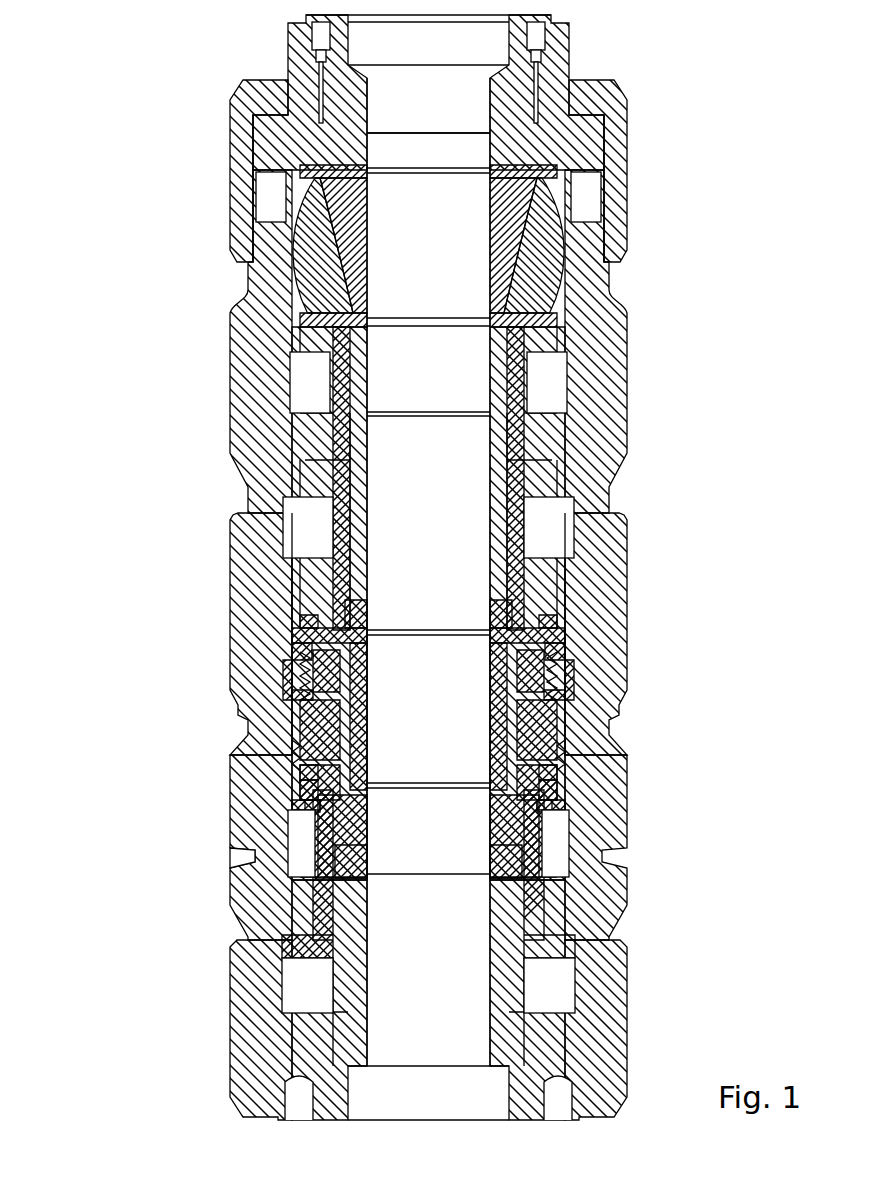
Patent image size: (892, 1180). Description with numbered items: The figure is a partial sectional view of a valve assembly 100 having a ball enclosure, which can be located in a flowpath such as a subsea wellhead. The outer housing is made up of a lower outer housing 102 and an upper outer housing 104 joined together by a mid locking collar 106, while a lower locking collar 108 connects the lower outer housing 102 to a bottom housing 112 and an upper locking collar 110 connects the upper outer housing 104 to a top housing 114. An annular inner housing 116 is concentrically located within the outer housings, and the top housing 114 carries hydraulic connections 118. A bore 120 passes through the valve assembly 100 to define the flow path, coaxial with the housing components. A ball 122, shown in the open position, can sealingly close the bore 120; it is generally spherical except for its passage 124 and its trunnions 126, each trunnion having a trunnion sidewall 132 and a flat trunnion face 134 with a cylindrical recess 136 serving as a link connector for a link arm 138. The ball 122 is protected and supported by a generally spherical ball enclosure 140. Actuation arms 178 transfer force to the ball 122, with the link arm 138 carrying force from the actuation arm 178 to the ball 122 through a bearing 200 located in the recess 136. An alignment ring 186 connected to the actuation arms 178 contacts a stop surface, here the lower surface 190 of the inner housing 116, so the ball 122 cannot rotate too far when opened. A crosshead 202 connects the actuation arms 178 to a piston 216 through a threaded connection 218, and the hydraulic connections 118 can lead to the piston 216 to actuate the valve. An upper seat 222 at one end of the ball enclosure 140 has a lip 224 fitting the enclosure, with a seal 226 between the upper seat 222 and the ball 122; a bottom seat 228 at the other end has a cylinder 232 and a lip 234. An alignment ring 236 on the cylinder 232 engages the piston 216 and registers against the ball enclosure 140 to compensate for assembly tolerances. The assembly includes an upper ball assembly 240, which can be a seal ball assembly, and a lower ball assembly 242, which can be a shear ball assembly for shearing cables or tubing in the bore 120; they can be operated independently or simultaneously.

The valve assembly 100 is at (126, 36).
The lower outer housing 102 is at (232, 830).
The upper outer housing 104 is at (230, 355).
The mid locking collar 106 is at (230, 559).
The lower locking collar 108 is at (627, 1026).
The upper locking collar 110 is at (230, 140).
The bottom housing 112 is at (248, 1057).
The top housing 114 is at (285, 69).
The inner housing 116 is at (330, 527).
The hydraulic connections 118 is at (318, 26).
The bore 120 is at (382, 990).
The ball 122 is at (310, 712).
The passage 124 is at (520, 718).
The trunnions 126 is at (560, 750).
The trunnion sidewall 132 is at (545, 785).
The trunnion face 134 is at (560, 695).
The cylindrical recess 136 is at (567, 670).
The link arm 138 is at (300, 707).
The ball enclosure 140 is at (312, 790).
The actuation arms 178 is at (295, 660).
The alignment ring 186 is at (560, 645).
The lower surface 190 is at (300, 650).
The bearing 200 is at (497, 648).
The crosshead 202 is at (300, 745).
The piston 216 is at (235, 858).
The threaded connection 218 is at (540, 805).
The upper seat 222 is at (512, 605).
The lip 224 is at (510, 165).
The seal 226 is at (370, 625).
The bottom seat 228 is at (320, 806).
The cylinder 232 is at (518, 856).
The lip 234 is at (536, 325).
The alignment ring 236 is at (525, 838).
The upper ball assembly 240 is at (658, 208).
The lower ball assembly 242 is at (138, 666).